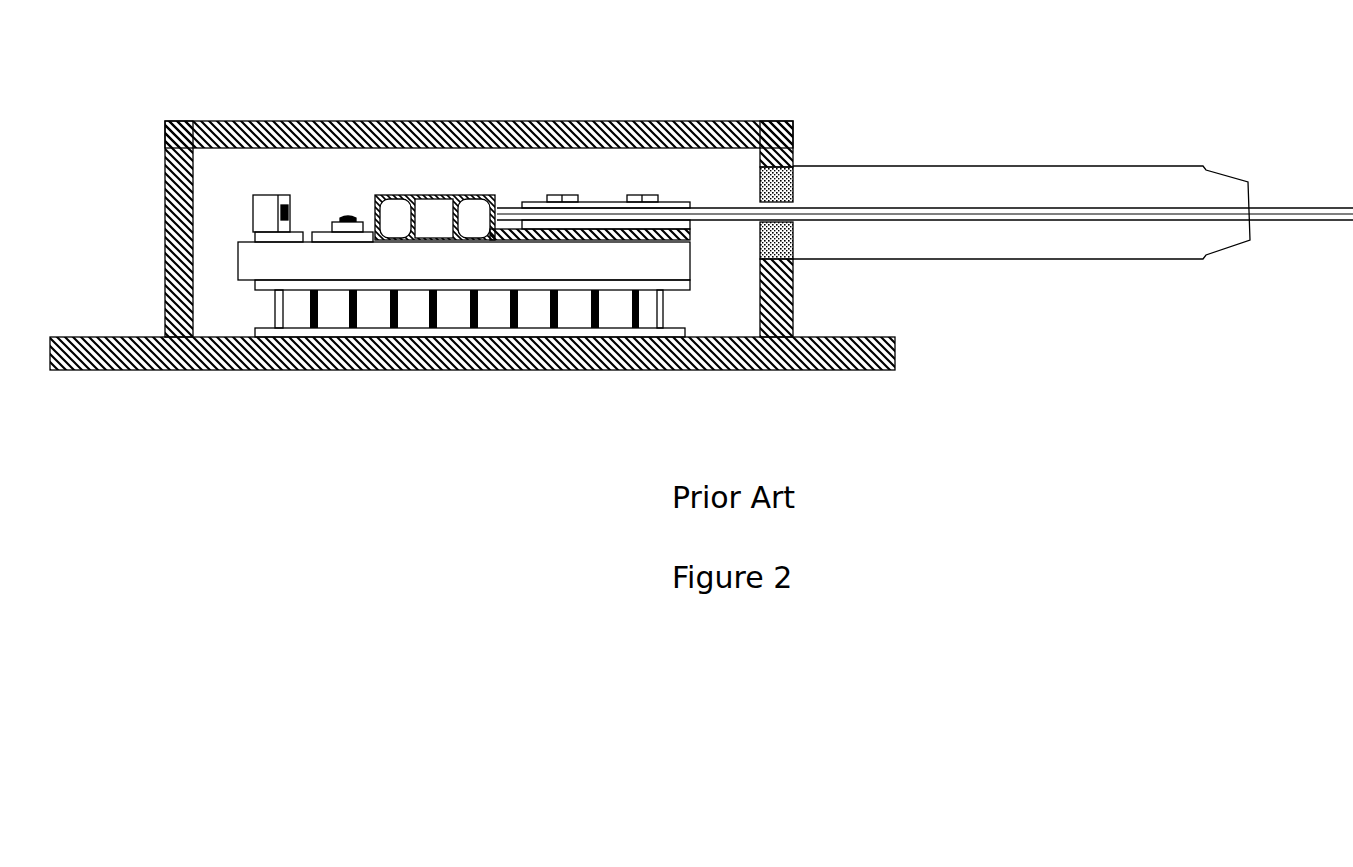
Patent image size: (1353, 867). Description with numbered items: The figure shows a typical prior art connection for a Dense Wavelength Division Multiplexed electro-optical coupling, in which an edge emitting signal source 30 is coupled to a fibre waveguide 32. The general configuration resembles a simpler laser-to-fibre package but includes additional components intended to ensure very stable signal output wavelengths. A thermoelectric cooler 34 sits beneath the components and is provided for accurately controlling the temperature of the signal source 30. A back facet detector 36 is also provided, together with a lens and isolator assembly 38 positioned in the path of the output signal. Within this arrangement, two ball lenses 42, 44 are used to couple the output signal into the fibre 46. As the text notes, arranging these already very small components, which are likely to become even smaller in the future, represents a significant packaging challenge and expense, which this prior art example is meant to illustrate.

The edge emitting signal source 30 is at (349, 215).
The fibre waveguide 32 is at (790, 202).
The thermoelectric cooler 34 is at (412, 310).
The back facet detector 36 is at (268, 200).
The lens and isolator assembly 38 is at (462, 148).
The ball lens 42 is at (476, 211).
The ball lens 44 is at (393, 215).
The fibre 46 is at (523, 207).